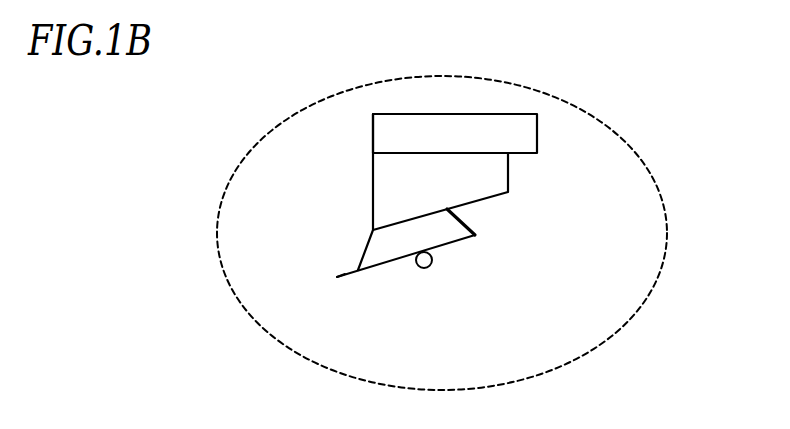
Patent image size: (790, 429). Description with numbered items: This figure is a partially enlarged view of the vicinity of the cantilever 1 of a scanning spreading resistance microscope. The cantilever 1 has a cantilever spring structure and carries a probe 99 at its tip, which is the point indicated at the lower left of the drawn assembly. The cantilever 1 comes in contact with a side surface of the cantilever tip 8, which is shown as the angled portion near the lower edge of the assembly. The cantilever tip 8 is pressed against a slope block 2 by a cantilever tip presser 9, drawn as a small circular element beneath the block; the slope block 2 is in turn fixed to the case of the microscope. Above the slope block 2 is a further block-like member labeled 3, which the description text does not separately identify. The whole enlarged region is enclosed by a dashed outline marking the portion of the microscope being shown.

The cantilever 1 is at (382, 292).
The slope block 2 is at (480, 183).
The holder / shank 3 is at (517, 123).
The cantilever tip 8 is at (453, 230).
The cantilever tip presser 9 is at (430, 268).
The probe 99 is at (337, 277).